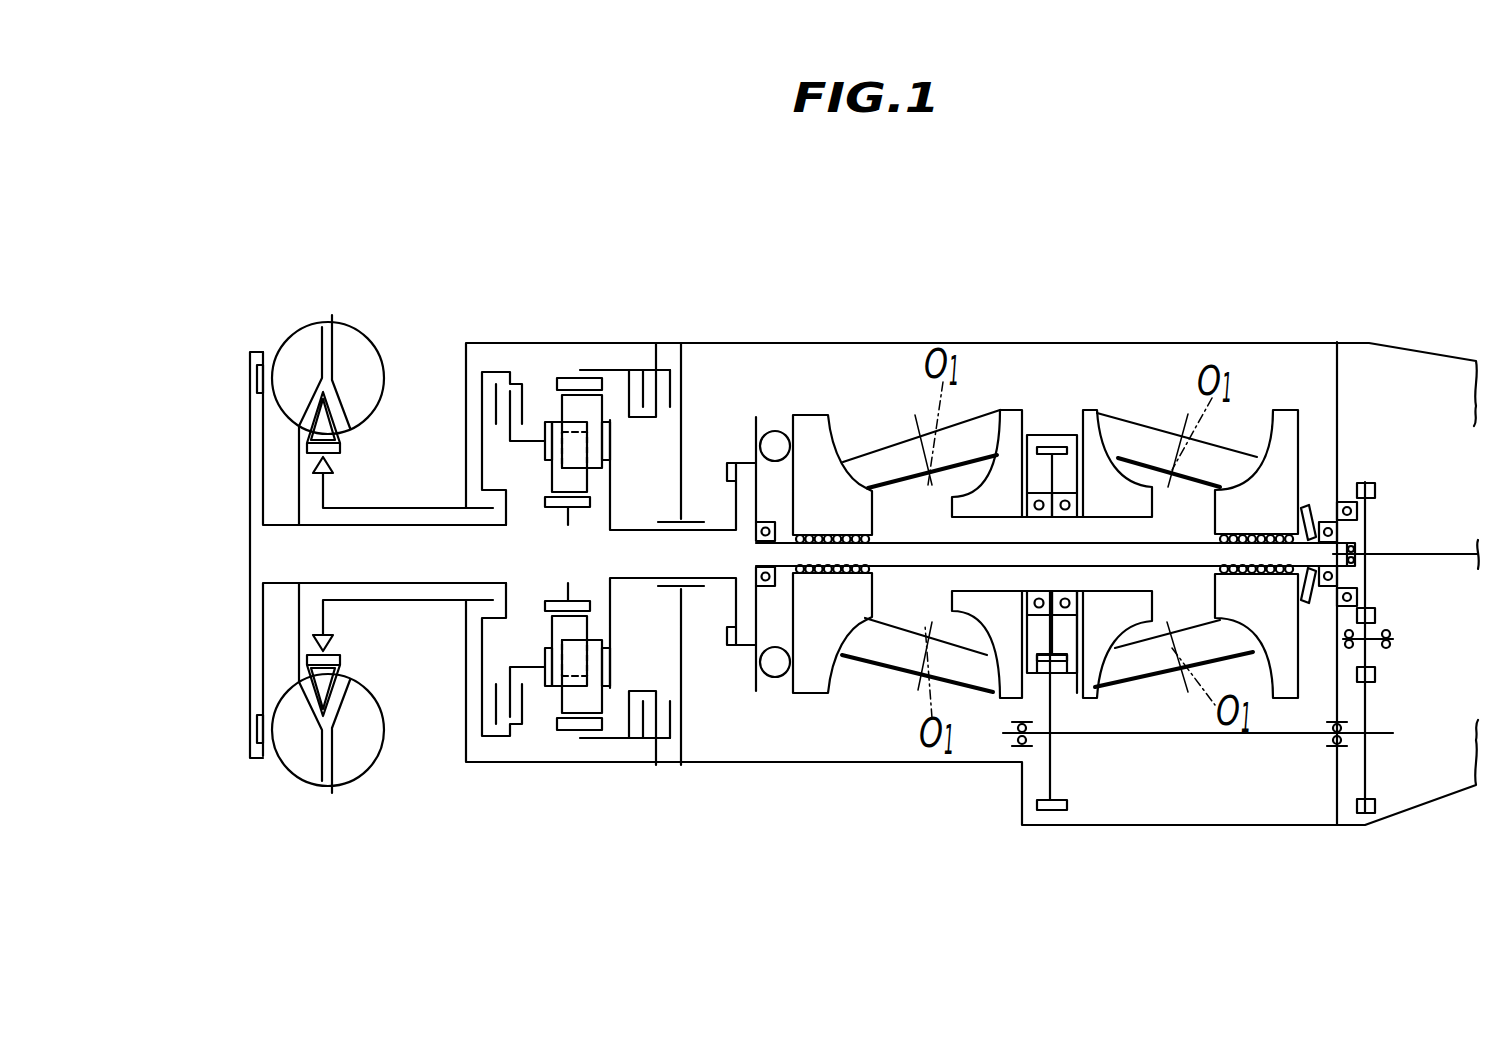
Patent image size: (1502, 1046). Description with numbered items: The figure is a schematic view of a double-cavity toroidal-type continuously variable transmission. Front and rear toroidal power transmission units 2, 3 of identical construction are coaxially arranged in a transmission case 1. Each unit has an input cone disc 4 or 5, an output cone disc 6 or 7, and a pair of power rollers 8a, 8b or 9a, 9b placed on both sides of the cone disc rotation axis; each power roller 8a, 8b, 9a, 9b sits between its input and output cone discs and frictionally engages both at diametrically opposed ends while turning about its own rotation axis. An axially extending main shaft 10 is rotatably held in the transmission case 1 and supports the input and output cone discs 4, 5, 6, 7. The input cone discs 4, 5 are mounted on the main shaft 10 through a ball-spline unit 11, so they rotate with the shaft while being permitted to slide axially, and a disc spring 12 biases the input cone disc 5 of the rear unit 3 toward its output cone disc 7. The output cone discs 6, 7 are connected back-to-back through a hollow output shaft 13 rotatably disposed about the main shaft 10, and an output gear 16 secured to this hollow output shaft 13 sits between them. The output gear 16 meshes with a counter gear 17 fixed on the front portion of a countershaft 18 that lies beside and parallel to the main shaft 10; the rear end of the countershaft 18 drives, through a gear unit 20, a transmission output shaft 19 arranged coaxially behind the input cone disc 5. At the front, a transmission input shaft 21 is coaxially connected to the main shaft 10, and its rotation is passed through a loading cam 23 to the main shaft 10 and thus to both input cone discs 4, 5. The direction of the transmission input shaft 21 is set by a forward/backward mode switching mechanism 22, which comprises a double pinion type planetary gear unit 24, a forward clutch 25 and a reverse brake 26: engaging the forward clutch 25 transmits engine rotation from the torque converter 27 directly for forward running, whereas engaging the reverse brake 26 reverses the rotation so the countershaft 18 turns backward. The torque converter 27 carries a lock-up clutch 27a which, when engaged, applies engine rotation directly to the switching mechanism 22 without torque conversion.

The transmission case 1 is at (537, 343).
The front toroidal power transmission unit 2 is at (864, 422).
The rear toroidal power transmission unit 3 is at (1231, 433).
The input cone disc 4 is at (813, 420).
The input cone disc 5 is at (1287, 418).
The output cone disc 6 is at (1013, 415).
The output cone disc 7 is at (1095, 420).
The power roller 8a is at (969, 430).
The power roller 8b is at (987, 682).
The power roller 9a is at (1141, 428).
The power roller 9b is at (1152, 668).
The main shaft 10 is at (905, 570).
The ball-spline unit 11 is at (820, 578).
The disc spring 12 is at (1313, 508).
The hollow output shaft 13 is at (1083, 592).
The output gear 16 is at (1058, 444).
The counter gear 17 is at (1043, 812).
The countershaft 18 is at (1123, 737).
The transmission output shaft 19 is at (1428, 553).
The gear unit 20 is at (1368, 703).
The transmission input shaft 21 is at (715, 523).
The forward/backward mode switching mechanism 22 is at (576, 366).
The loading cam 23 is at (774, 430).
The double pinion type planetary gear unit 24 is at (557, 695).
The forward clutch 25 is at (518, 727).
The reverse brake 26 is at (650, 740).
The torque converter 27 is at (348, 306).
The lock-up clutch 27a is at (263, 438).